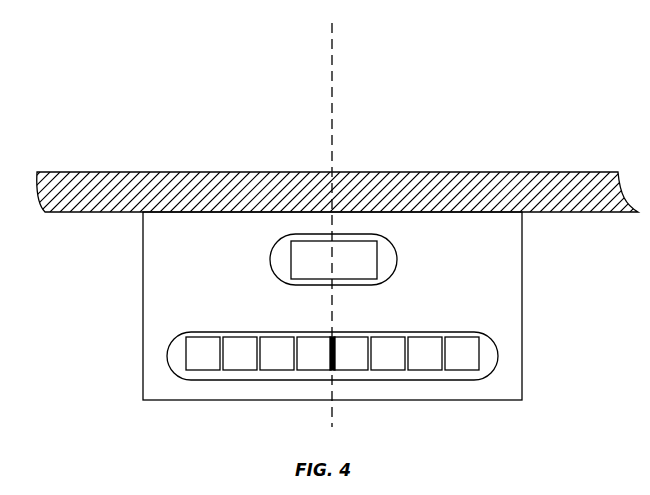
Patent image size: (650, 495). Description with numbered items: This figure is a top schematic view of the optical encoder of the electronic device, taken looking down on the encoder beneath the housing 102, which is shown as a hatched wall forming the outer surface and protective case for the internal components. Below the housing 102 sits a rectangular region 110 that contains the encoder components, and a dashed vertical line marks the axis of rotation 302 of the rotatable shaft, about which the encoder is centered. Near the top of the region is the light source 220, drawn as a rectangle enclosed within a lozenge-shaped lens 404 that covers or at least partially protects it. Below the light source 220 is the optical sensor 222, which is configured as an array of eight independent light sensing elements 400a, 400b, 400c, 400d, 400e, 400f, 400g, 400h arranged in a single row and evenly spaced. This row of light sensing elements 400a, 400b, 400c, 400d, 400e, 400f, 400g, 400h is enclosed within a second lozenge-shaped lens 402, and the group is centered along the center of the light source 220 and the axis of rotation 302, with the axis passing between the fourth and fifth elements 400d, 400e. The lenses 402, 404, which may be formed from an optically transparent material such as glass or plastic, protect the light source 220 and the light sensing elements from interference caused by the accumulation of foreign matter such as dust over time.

The housing 102 is at (232, 172).
The housing 110 is at (143, 277).
The axis of rotation 302 is at (332, 140).
The lens 404 is at (379, 236).
The light source 220 is at (377, 260).
The optical sensor 222 is at (257, 358).
The lens 402 is at (498, 354).
The light sensing element 400a is at (198, 334).
The light sensing element 400b is at (246, 370).
The light sensing element 400c is at (271, 334).
The light sensing element 400d is at (312, 370).
The light sensing element 400e is at (348, 334).
The light sensing element 400f is at (386, 370).
The light sensing element 400g is at (421, 334).
The light sensing element 400h is at (466, 370).